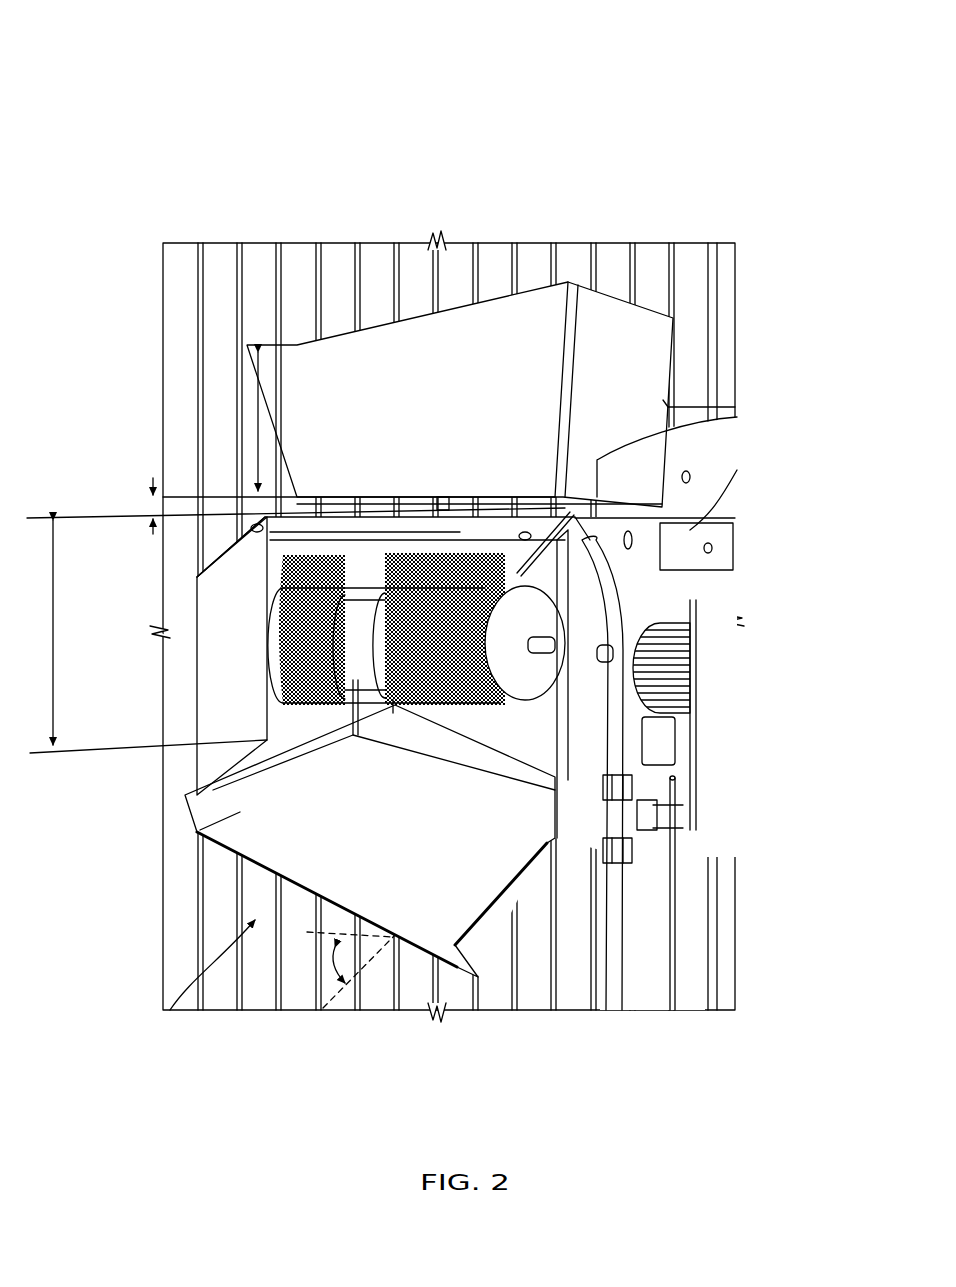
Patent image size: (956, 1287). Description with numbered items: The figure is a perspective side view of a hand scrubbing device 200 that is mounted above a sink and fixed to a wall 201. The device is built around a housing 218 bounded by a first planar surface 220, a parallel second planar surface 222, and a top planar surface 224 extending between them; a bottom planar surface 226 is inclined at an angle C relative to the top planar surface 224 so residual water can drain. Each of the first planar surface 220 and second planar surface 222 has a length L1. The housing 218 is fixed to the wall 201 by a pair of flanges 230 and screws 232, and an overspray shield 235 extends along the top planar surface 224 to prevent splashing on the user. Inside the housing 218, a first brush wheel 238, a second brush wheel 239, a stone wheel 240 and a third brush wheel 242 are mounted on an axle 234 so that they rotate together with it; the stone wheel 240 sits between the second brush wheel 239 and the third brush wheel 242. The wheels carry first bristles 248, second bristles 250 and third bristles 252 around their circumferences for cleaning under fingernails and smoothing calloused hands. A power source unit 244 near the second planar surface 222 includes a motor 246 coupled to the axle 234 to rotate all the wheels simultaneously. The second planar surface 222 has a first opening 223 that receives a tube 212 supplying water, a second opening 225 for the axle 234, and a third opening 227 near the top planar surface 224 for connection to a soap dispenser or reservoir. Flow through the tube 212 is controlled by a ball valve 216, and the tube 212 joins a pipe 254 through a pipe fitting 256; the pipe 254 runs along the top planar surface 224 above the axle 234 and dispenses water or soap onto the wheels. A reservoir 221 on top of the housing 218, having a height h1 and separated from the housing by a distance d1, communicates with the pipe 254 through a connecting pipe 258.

The scrubbing device 200 is at (157, 93).
The wall 201 is at (178, 940).
The tube 212 is at (617, 927).
The ball valve 216 is at (657, 827).
The housing 218 is at (199, 989).
The first planar surface 220 is at (267, 712).
The reservoir 221 is at (673, 332).
The second planar surface 222 is at (620, 960).
The first opening 223 is at (575, 555).
The top planar surface 224 is at (597, 460).
The second opening 225 is at (682, 740).
The bottom planar surface 226 is at (252, 815).
The third opening 227 is at (657, 547).
The pair of flanges 230 is at (717, 537).
The screws 232 is at (714, 549).
The axle 234 is at (632, 807).
The overspray shield 235 is at (200, 575).
The first brush wheel 238 is at (283, 615).
The second brush wheel 239 is at (283, 640).
The stone wheel 240 is at (267, 778).
The third brush wheel 242 is at (490, 680).
The power source unit 244 is at (717, 727).
The motor 246 is at (710, 700).
The first bristles 248 is at (283, 665).
The second bristles 250 is at (300, 687).
The third bristles 252 is at (393, 713).
The pipe 254 is at (520, 575).
The pipe fitting 256 is at (668, 677).
The connecting pipe 258 is at (437, 497).
The height of reservoir h1 is at (258, 350).
The distance between reservoir and housing d1 is at (150, 480).
The length of planar surfaces L1 is at (148, 636).
The angle of bottom planar surface C is at (330, 975).